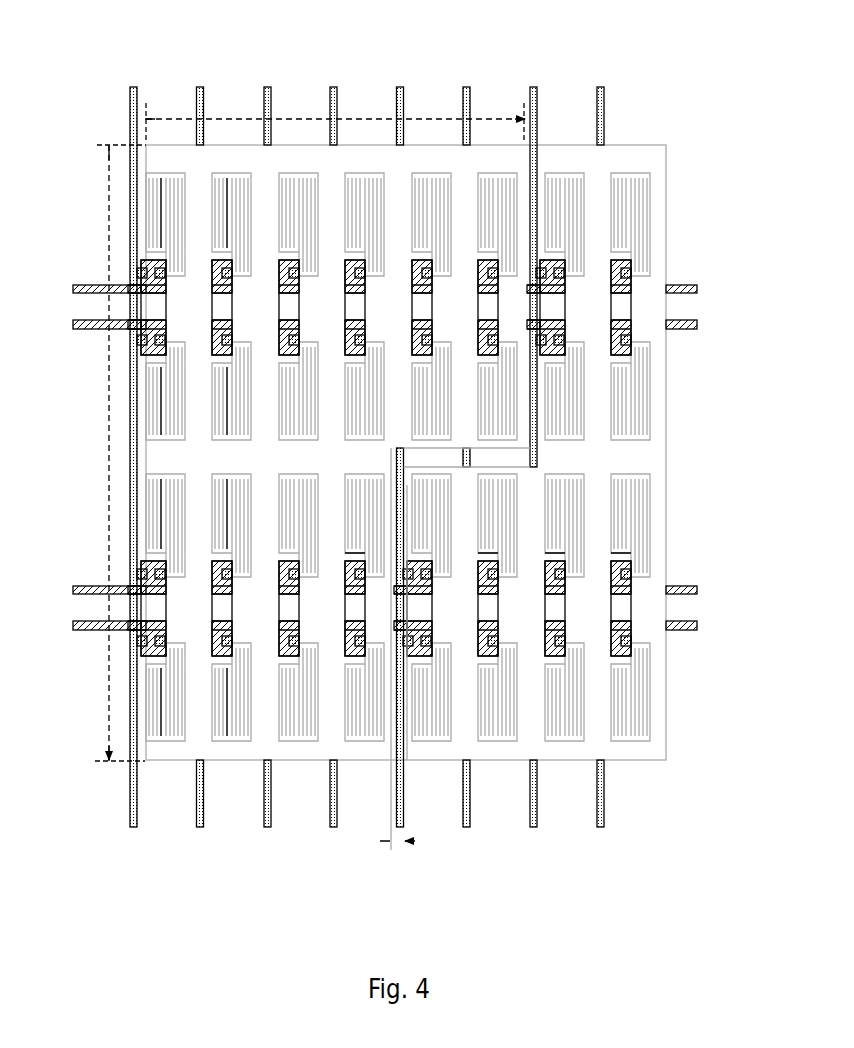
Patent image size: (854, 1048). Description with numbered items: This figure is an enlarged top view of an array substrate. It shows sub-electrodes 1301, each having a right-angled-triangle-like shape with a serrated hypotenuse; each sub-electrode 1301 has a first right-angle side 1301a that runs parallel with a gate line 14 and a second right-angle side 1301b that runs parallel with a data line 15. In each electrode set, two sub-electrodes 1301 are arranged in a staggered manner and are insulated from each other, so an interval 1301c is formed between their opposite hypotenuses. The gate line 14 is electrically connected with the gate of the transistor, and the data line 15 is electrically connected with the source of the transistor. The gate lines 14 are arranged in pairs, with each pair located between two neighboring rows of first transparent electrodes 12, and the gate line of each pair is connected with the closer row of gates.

The first transparent electrode 12 is at (640, 691).
The gate line 14 is at (697, 289).
The data line 15 is at (332, 88).
The sub-electrode 1301 is at (188, 747).
The first right-angle side 1301a is at (211, 118).
The second right-angle side 1301b is at (110, 441).
The interval 1301c is at (437, 841).